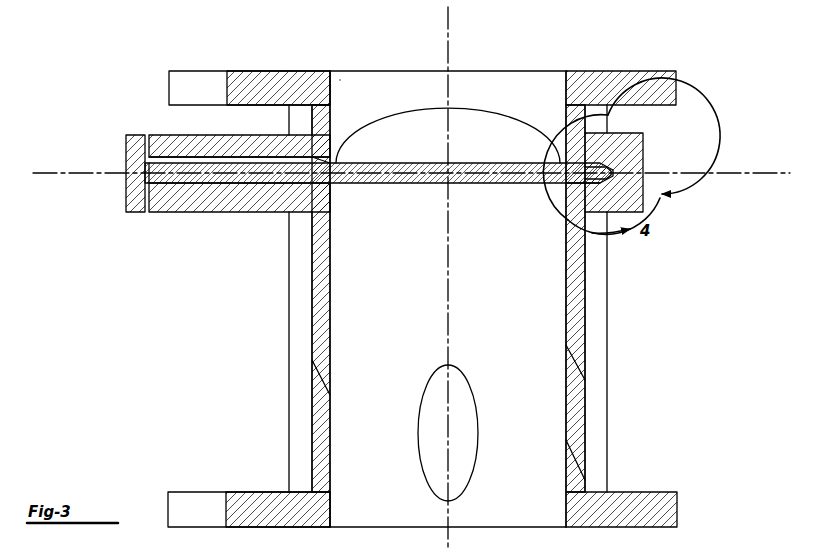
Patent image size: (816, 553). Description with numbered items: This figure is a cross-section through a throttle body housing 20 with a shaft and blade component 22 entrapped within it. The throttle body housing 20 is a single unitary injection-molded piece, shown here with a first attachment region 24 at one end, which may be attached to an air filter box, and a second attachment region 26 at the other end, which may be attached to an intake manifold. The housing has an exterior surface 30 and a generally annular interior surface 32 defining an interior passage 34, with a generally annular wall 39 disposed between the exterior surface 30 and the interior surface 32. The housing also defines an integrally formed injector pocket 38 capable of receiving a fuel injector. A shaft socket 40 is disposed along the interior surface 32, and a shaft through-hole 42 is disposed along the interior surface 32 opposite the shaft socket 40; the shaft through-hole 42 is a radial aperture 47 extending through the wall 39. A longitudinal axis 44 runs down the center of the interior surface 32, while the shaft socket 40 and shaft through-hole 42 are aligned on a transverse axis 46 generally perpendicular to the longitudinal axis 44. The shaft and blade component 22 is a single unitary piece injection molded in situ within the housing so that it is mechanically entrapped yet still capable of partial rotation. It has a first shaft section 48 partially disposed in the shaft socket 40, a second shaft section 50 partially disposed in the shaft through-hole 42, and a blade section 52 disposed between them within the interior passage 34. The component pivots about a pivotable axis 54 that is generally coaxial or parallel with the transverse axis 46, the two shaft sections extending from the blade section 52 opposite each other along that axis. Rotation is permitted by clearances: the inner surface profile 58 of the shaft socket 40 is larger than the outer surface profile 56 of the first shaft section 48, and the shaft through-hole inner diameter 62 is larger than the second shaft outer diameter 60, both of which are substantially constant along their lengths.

The throttle body housing 20 is at (595, 292).
The shaft and blade component 22 is at (480, 118).
The first attachment region 24 is at (668, 90).
The second attachment region 26 is at (672, 512).
The exterior surface 30 is at (585, 332).
The interior surface 32 is at (565, 463).
The interior passage 34 is at (375, 98).
The injector pocket 38 is at (430, 433).
The wall 39 is at (318, 376).
The shaft socket 40 is at (607, 160).
The shaft through-hole 42 is at (163, 160).
The longitudinal axis 44 is at (448, 40).
The transverse axis 46 is at (53, 178).
The radial aperture 47 is at (318, 160).
The first shaft section 48 is at (575, 188).
The second shaft section 50 is at (182, 184).
The blade section 52 is at (402, 150).
The pivotable axis 54 is at (92, 173).
The outer surface profile 56 is at (582, 187).
The inner surface profile 58 is at (593, 188).
The second shaft outer diameter 60 is at (223, 184).
The shaft through-hole inner diameter 62 is at (273, 184).